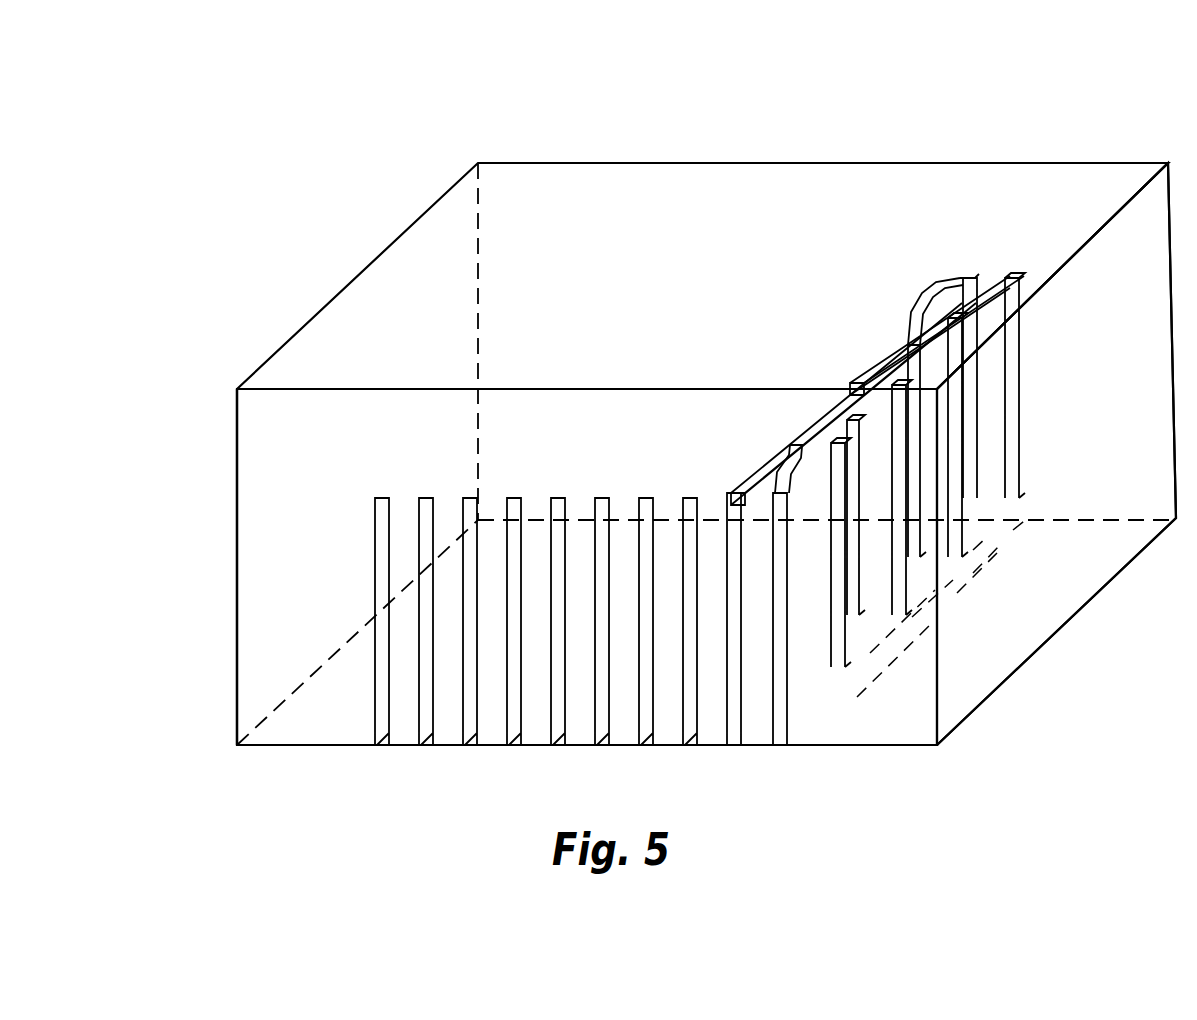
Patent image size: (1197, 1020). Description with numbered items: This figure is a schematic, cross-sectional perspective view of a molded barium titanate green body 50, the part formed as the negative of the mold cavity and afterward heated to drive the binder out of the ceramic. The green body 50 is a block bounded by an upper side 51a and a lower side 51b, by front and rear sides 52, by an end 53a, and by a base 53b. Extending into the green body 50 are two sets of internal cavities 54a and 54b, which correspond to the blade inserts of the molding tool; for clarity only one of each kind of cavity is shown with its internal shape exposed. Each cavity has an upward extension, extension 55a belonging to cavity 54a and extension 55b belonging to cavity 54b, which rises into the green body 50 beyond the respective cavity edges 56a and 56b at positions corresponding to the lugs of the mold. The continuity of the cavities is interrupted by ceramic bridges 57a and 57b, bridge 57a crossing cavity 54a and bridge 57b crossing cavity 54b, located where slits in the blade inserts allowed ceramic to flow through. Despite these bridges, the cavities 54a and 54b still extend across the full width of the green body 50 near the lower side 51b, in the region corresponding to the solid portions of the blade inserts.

The green body 50 is at (1072, 146).
The upper side 51a is at (792, 185).
The lower side 51b is at (730, 740).
The front and rear sides 52 is at (678, 163).
The end 53a is at (1060, 620).
The base 53b is at (250, 530).
The cavity 54a is at (428, 740).
The cavity 54b is at (381, 740).
The extension 55a is at (817, 463).
The extension 55b is at (943, 290).
The cavity edge 56a is at (855, 418).
The cavity edge 56b is at (905, 345).
The ceramic bridge 57a is at (957, 545).
The ceramic bridge 57b is at (915, 527).